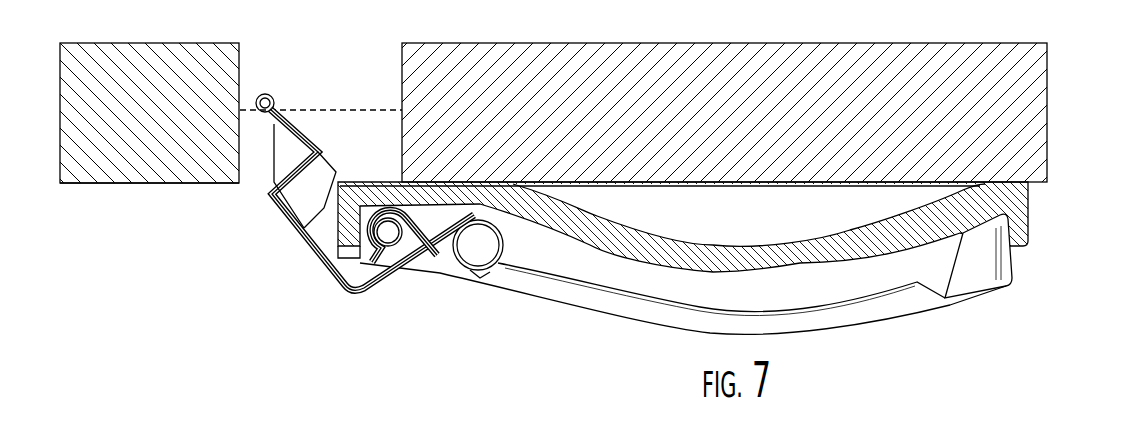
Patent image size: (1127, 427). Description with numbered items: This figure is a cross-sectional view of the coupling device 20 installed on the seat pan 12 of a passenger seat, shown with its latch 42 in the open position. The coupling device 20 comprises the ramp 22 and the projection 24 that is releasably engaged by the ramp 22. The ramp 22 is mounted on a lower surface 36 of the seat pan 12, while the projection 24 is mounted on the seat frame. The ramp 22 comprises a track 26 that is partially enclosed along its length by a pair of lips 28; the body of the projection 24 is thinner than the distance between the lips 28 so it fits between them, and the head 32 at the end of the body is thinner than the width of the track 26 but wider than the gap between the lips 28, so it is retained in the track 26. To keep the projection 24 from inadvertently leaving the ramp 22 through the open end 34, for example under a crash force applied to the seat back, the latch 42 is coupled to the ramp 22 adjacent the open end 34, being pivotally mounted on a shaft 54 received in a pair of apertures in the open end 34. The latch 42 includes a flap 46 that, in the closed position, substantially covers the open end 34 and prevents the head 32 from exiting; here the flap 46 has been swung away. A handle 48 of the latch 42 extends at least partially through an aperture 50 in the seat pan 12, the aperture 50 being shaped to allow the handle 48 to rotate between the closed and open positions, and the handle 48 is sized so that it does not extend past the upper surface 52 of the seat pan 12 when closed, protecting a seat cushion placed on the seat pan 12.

The seat pan 12 is at (1032, 165).
The coupling device 20 is at (902, 200).
The ramp 22 is at (843, 233).
The projection 24 is at (482, 253).
The track 26 is at (595, 226).
The lips 28 is at (645, 325).
The head 32 is at (483, 210).
The open end 34 is at (973, 283).
The lower surface 36 is at (123, 184).
The latch 42 is at (394, 197).
The flap 46 is at (437, 255).
The handle 48 is at (293, 117).
The aperture 50 is at (240, 79).
The upper surface 52 is at (105, 43).
The shaft 54 is at (387, 245).